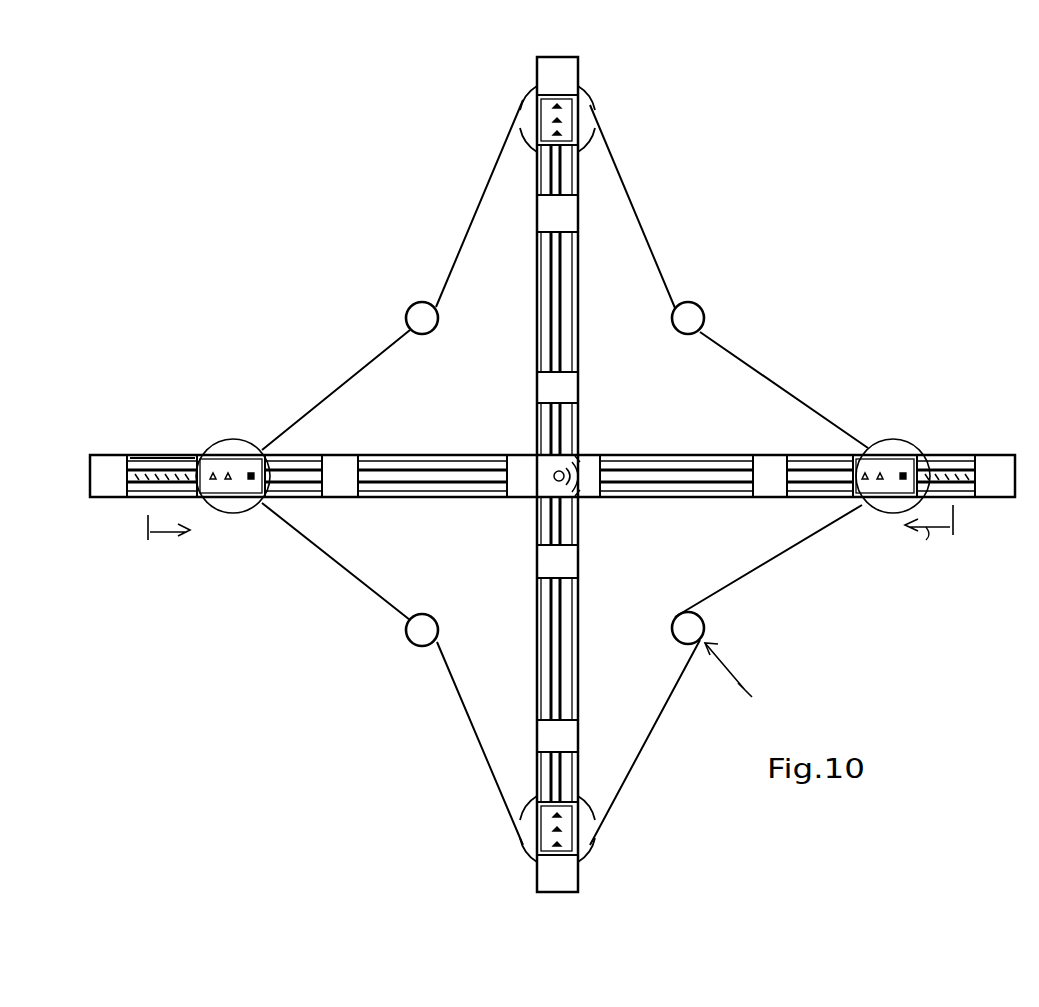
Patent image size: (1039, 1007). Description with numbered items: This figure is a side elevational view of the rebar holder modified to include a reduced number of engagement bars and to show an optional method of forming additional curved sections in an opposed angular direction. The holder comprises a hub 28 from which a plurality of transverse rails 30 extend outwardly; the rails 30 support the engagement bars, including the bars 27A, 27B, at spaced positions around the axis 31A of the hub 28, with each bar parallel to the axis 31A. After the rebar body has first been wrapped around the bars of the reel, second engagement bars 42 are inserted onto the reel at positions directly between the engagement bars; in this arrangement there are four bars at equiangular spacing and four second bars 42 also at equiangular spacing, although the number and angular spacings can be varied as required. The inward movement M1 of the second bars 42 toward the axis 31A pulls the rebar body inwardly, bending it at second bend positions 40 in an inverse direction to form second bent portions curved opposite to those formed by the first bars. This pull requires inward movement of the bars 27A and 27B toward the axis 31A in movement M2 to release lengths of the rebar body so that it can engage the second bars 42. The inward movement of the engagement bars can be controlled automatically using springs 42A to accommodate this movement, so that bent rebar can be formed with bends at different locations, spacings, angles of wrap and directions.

The engagement bar 27A is at (895, 445).
The engagement bar 27B is at (232, 510).
The hub 28 is at (578, 497).
The transverse rails 30 is at (684, 455).
The axis 31A is at (578, 438).
The second bend positions 40 is at (425, 335).
The second engagement bars 42 is at (698, 645).
The springs 42A is at (197, 391).
The inward movement M1 is at (715, 648).
The inward movement M2 is at (170, 540).